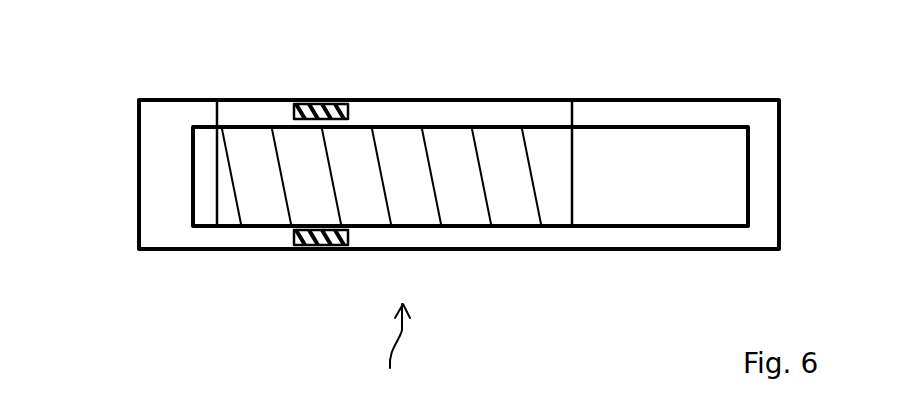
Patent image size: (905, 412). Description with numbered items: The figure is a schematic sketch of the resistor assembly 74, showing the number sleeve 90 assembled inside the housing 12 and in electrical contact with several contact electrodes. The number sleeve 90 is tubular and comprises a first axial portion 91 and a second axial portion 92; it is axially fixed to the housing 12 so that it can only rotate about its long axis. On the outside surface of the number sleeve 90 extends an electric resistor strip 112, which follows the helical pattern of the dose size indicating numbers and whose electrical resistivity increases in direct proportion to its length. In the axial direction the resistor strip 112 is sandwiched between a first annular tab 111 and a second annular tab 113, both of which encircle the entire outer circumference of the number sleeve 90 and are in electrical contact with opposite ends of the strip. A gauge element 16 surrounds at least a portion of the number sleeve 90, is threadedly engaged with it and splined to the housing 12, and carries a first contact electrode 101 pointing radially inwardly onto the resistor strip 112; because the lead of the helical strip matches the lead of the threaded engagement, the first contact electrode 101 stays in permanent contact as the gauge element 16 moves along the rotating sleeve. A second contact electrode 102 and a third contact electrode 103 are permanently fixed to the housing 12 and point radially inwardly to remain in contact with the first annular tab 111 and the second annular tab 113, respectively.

The housing 12 is at (588, 251).
The gauge element 16 is at (338, 104).
The resistor assembly 74 is at (395, 350).
The number sleeve 90 is at (540, 224).
The first axial portion 91 is at (227, 231).
The second axial portion 92 is at (642, 224).
The first contact electrode 101 is at (322, 125).
The second contact electrode 102 is at (216, 113).
The third contact electrode 103 is at (575, 113).
The first annular tab 111 is at (216, 201).
The electric resistor strip 112 is at (233, 178).
The second annular tab 113 is at (574, 183).